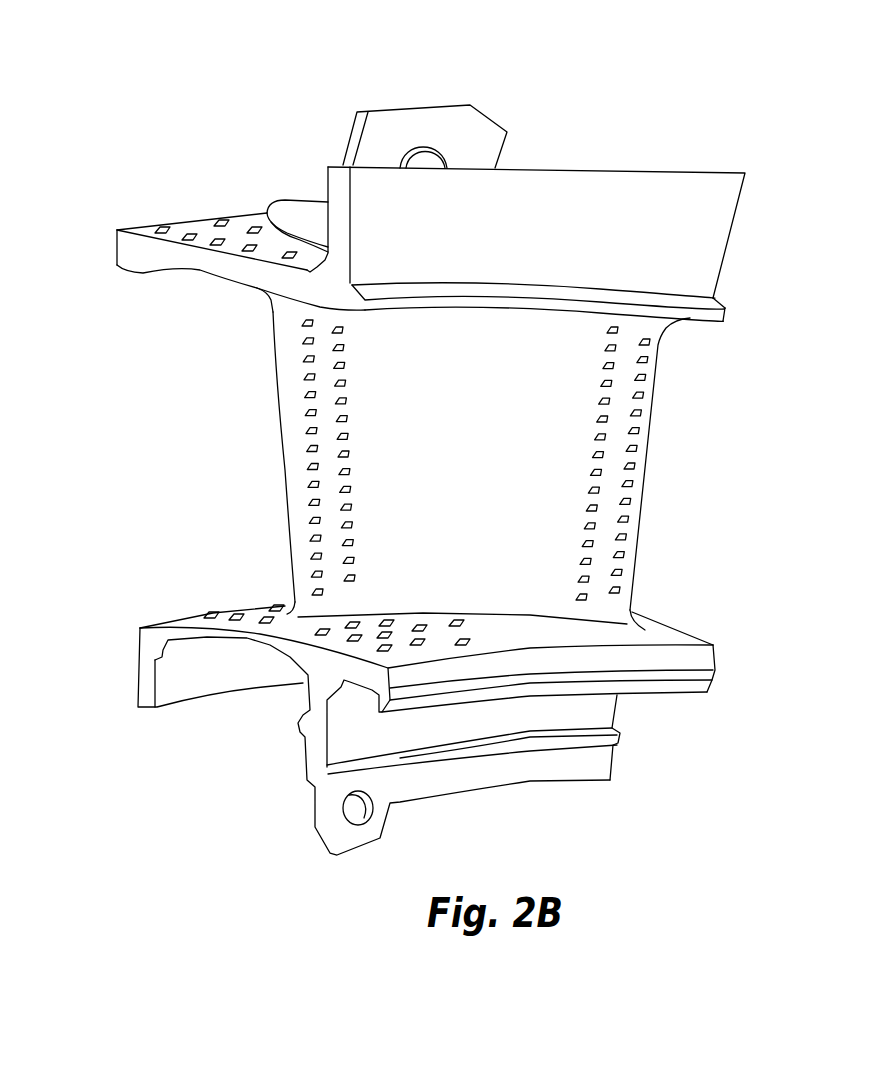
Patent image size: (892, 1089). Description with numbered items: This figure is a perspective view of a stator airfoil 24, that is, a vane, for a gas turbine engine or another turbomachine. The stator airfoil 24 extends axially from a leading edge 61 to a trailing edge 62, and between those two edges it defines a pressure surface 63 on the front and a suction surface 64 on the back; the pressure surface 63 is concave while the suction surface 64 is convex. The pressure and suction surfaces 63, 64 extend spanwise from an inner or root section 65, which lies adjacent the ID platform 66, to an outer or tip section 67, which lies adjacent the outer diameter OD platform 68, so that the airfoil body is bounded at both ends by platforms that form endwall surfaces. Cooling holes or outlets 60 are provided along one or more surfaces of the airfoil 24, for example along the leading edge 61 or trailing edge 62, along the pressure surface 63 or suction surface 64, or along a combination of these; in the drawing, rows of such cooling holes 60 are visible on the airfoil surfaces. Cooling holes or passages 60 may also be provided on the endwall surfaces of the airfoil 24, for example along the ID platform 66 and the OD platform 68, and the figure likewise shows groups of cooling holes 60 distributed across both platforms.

The stator airfoil 24 is at (145, 100).
The cooling holes 60 is at (227, 220).
The leading edge 61 is at (275, 352).
The trailing edge 62 is at (640, 515).
The pressure surface 63 is at (397, 462).
The suction surface 64 is at (648, 460).
The inner section 65 is at (305, 598).
The ID platform 66 is at (702, 653).
The outer section 67 is at (285, 316).
The OD platform 68 is at (130, 257).